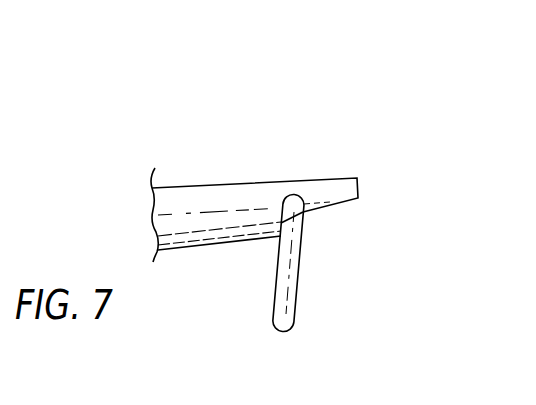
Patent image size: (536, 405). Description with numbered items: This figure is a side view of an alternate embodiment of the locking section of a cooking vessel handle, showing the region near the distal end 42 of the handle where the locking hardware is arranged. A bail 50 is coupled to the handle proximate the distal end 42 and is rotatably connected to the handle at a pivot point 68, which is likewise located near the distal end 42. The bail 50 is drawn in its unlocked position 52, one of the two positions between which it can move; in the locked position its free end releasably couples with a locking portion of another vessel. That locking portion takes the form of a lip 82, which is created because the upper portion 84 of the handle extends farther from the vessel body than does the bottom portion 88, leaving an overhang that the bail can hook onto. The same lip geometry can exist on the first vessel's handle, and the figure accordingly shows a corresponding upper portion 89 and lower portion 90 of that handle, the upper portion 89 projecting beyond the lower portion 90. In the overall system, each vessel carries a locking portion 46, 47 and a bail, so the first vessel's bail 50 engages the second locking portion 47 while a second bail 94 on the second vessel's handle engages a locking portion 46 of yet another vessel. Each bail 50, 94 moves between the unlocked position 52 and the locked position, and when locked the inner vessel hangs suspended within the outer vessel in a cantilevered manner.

The distal end 42 is at (308, 189).
The locking portion 46 is at (340, 69).
The second locking portion 47 is at (313, 137).
The bail 50 is at (330, 282).
The unlocked position 52 is at (268, 134).
The pivot point 68 is at (285, 200).
The lip 82 is at (327, 222).
The upper portion 84 is at (405, 171).
The bottom portion 88 is at (201, 295).
The upper portion 89 is at (359, 190).
The lower portion 90 is at (239, 246).
The second bail 94 is at (303, 280).